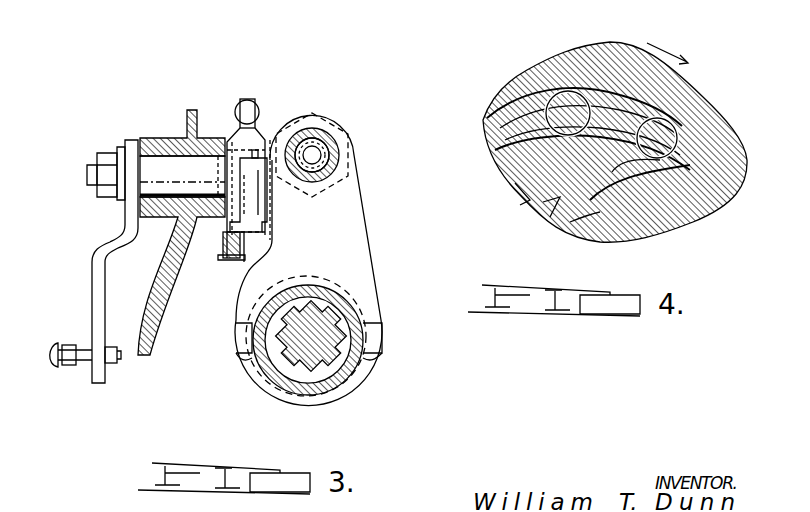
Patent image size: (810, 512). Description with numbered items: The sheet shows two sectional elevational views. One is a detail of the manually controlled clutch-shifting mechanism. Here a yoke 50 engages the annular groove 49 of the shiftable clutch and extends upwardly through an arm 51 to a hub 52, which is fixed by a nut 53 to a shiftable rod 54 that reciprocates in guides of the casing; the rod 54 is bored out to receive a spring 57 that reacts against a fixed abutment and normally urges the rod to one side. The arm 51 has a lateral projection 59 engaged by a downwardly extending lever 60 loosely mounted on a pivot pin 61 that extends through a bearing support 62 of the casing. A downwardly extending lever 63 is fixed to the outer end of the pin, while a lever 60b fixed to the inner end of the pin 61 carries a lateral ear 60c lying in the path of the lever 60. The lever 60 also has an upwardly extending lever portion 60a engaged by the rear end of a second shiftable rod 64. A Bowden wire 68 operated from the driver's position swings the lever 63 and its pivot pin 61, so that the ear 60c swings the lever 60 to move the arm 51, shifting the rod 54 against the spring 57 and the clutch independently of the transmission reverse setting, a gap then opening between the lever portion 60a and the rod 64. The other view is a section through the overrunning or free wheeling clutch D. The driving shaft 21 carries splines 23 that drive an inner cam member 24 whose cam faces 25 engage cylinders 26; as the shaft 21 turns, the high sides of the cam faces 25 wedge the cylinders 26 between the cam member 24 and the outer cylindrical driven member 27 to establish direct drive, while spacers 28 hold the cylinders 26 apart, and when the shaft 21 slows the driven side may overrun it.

In FIG. 3, the bearing support 62 is at (153, 138).
In FIG. 3, the pivot pin 61 is at (192, 167).
In FIG. 3, the lever 63 is at (92, 290).
In FIG. 3, the Bowden wire 68 is at (73, 343).
In FIG. 3, the lever portion 60a is at (250, 97).
In FIG. 3, the second shiftable rod 64 is at (262, 112).
In FIG. 3, the lever 60 is at (232, 243).
In FIG. 3, the lever 60b is at (253, 188).
In FIG. 3, the lateral ear 60c is at (222, 222).
In FIG. 3, the lateral projection 59 is at (216, 258).
In FIG. 3, the arm 51 is at (368, 240).
In FIG. 3, the yoke 50 is at (375, 307).
In FIG. 3, the annular groove 49 is at (372, 362).
In FIG. 3, the hub 52 is at (335, 150).
In FIG. 3, the spring 57 is at (318, 140).
In FIG. 3, the shiftable rod 54 is at (357, 137).
In FIG. 3, the nut 53 is at (360, 153).
In FIG. 4, the overrunning or free wheeling clutch D is at (574, 43).
In FIG. 4, the spacers 28 is at (522, 107).
In FIG. 4, the cylinders 26 is at (577, 98).
In FIG. 4, the outer cylindrical driven member 27 is at (710, 93).
In FIG. 4, the cam faces 25 is at (612, 172).
In FIG. 4, the inner cam member 24 is at (525, 193).
In FIG. 4, the splines 23 is at (548, 218).
In FIG. 4, the shaft 21 is at (588, 238).